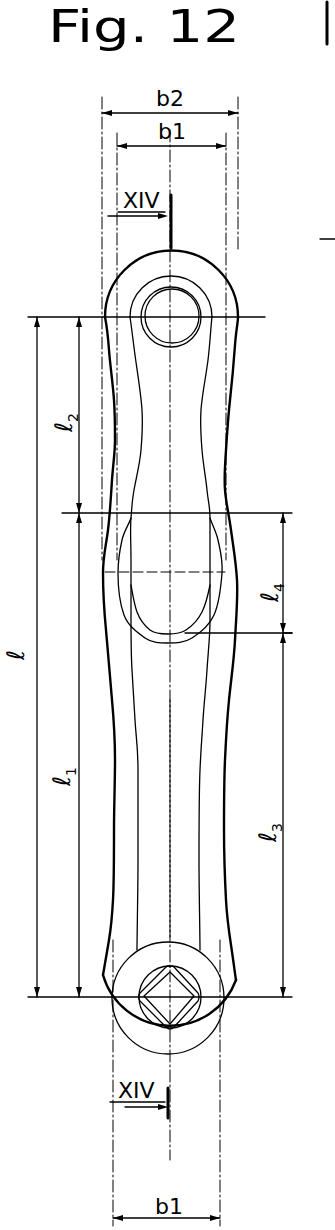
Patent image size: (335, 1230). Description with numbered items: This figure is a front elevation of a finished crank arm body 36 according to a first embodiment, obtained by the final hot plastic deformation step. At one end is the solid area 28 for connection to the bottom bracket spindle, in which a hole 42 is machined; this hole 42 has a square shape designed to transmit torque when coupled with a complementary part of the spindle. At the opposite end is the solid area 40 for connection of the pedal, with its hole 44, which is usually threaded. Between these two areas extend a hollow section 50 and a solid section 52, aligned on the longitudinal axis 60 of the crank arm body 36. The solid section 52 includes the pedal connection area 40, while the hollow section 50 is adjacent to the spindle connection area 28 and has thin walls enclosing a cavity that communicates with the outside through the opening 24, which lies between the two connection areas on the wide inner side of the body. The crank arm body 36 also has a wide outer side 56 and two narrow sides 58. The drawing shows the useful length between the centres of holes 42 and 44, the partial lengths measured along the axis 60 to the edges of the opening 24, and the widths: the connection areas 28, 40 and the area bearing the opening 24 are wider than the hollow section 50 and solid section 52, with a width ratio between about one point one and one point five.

The opening 24 is at (205, 612).
The solid area for connection to the bottom bracket spindle 28 is at (208, 1022).
The crank arm body 36 is at (250, 242).
The solid area for connection of the pedal 40 is at (217, 343).
The hole for connection to the bottom bracket spindle 42 is at (158, 1006).
The hole for connection of the pedal 44 is at (196, 304).
The hollow section 50 is at (245, 765).
The solid section 52 is at (242, 440).
The wide outer side 56 is at (334, 655).
The narrow sides 58 is at (108, 680).
The longitudinal axis 60 is at (170, 848).